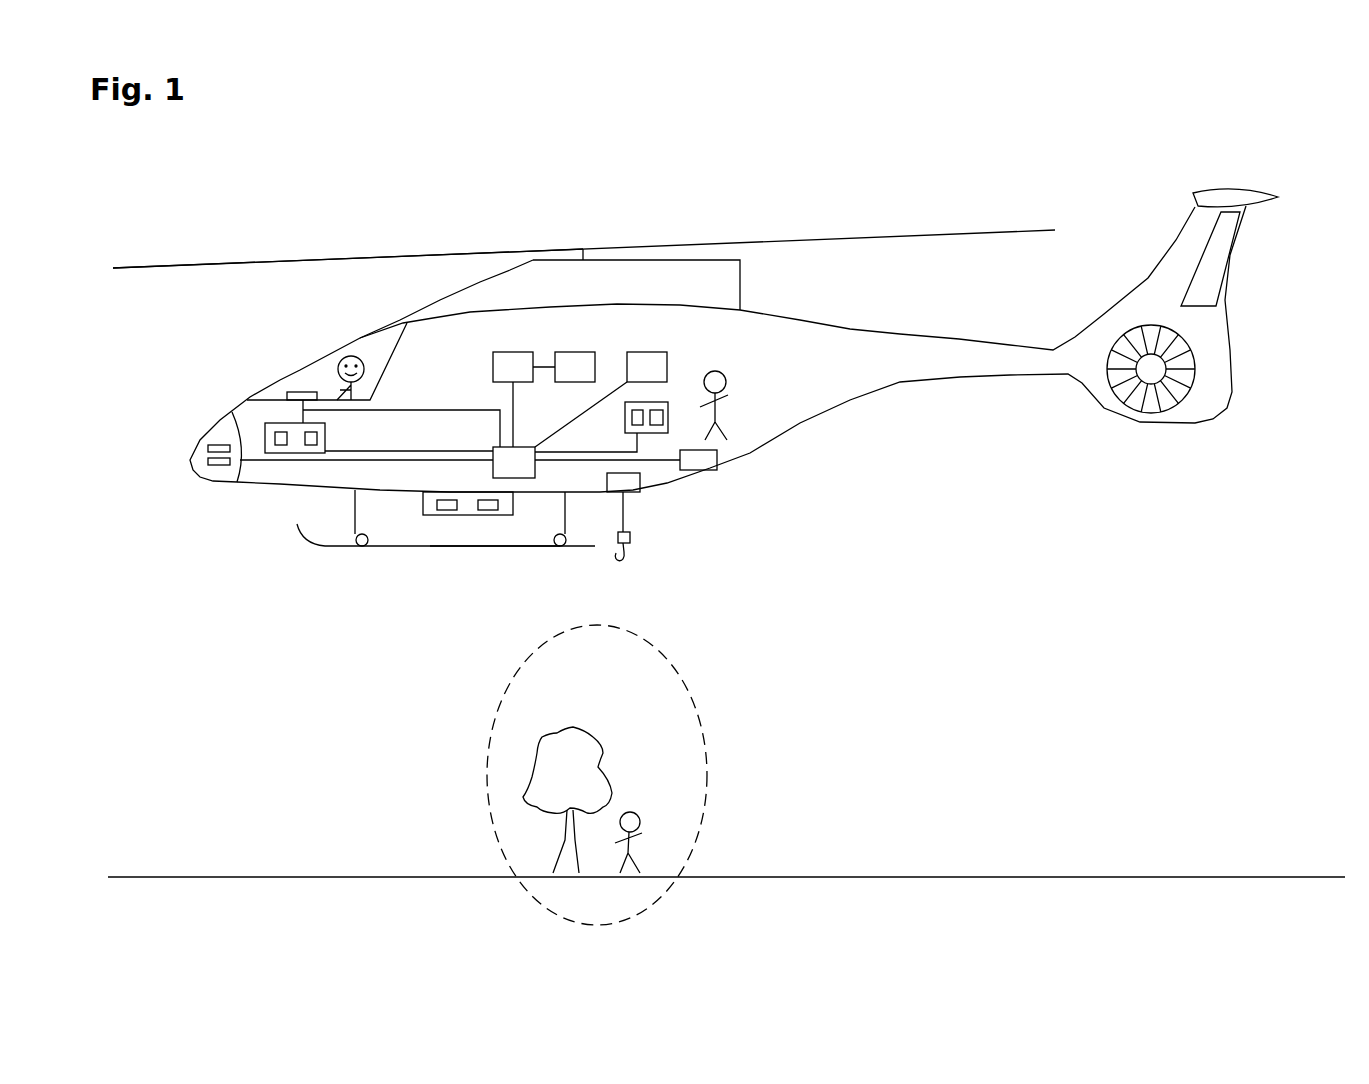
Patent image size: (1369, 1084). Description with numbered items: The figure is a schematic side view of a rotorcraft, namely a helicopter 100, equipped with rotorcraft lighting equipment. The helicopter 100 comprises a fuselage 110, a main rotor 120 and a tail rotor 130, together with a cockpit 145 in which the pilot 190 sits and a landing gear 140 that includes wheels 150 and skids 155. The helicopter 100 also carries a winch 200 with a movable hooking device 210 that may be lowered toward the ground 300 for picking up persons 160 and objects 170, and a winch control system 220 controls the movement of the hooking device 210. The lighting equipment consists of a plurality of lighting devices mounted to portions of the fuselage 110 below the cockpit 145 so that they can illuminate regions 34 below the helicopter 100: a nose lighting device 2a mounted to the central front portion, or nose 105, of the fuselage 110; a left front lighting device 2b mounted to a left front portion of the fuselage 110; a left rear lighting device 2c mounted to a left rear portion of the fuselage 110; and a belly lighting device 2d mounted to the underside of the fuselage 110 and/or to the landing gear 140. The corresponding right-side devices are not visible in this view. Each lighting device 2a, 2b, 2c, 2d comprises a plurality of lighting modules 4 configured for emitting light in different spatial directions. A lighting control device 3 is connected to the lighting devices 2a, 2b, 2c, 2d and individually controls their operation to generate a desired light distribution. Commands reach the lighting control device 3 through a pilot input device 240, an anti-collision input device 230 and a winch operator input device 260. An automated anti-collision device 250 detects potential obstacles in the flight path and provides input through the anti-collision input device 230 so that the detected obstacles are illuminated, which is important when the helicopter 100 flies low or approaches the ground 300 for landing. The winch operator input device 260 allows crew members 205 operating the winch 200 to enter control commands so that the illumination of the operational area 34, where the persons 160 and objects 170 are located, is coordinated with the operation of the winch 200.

The helicopter 100 is at (918, 150).
The nose 105 is at (192, 438).
The fuselage 110 is at (827, 484).
The main rotor 120 is at (1003, 203).
The tail rotor 130 is at (1113, 437).
The landing gear 140 is at (302, 553).
The cockpit 145 is at (273, 348).
The wheels 150 is at (355, 553).
The skids 155 is at (505, 548).
The persons 160 is at (640, 795).
The objects 170 is at (580, 720).
The pilot 190 is at (362, 343).
The winch 200 is at (646, 498).
The crew members 205 is at (737, 404).
The hooking device 210 is at (638, 566).
The winch control system 220 is at (717, 461).
The anti-collision input device 230 is at (513, 360).
The pilot input device 240 is at (300, 391).
The automated anti-collision device 250 is at (575, 360).
The winch operator input device 260 is at (647, 360).
The ground 300 is at (990, 876).
The nose lighting device 2a is at (190, 478).
The left front lighting device 2b is at (345, 434).
The left rear lighting device 2c is at (674, 393).
The belly lighting device 2d is at (425, 527).
The lighting control device 3 is at (520, 468).
The lighting modules 4 is at (281, 432).
The operational area 34 is at (714, 690).